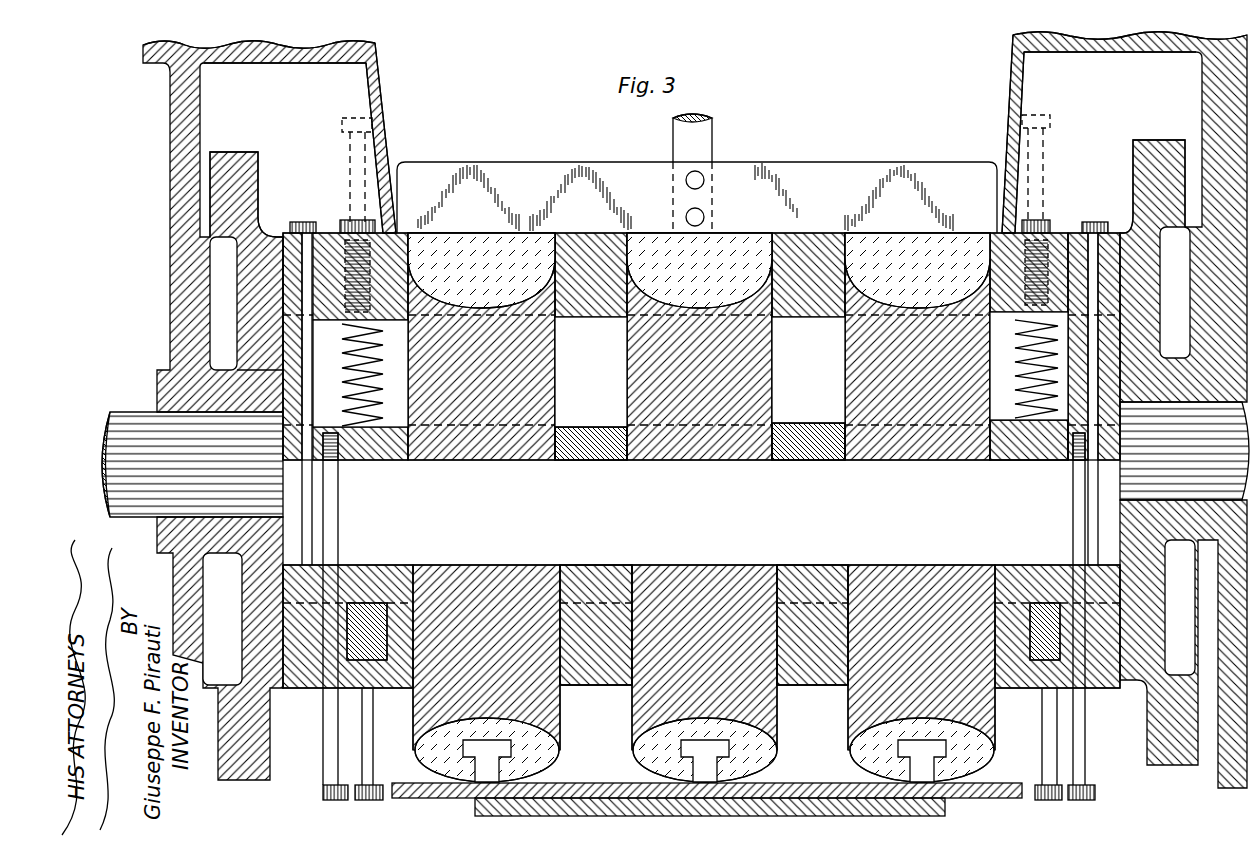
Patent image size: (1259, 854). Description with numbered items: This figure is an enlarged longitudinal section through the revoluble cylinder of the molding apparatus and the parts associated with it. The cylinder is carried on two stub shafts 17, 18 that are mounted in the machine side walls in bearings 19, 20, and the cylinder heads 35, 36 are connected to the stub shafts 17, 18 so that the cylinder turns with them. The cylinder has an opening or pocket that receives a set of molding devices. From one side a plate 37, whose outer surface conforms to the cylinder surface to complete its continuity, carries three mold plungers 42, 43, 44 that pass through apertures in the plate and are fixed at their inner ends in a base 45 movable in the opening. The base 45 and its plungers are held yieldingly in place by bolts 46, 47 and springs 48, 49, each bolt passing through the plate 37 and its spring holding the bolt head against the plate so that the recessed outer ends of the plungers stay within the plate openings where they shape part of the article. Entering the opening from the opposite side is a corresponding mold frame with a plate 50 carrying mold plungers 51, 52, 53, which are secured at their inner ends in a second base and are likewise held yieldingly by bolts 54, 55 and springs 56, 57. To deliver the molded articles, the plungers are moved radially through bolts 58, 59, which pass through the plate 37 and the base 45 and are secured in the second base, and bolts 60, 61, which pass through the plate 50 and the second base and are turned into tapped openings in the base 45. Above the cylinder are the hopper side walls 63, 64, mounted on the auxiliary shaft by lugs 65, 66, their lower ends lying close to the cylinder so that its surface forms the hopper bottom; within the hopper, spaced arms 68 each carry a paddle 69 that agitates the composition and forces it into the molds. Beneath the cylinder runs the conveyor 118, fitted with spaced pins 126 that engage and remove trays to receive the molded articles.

The stub shaft 17 is at (116, 422).
The stub shaft 18 is at (1184, 451).
The bearing 19 is at (232, 397).
The bearing 20 is at (1168, 382).
The cylinder head 35 is at (232, 152).
The cylinder head 36 is at (1148, 142).
The plate 37 is at (598, 312).
The mold plunger 42 is at (548, 400).
The mold plunger 43 is at (752, 380).
The mold plunger 44 is at (963, 385).
The base 45 is at (596, 460).
The bolt 46 is at (345, 225).
The bolt 47 is at (1043, 222).
The spring 48 is at (357, 350).
The spring 49 is at (1045, 365).
The plate 50 is at (600, 685).
The mold plunger 51 is at (548, 712).
The mold plunger 52 is at (765, 690).
The mold plunger 53 is at (865, 705).
The bolt 54 is at (373, 745).
The bolt 55 is at (1046, 744).
The spring 56 is at (368, 688).
The spring 57 is at (1018, 686).
The bolt 58 is at (305, 258).
The bolt 59 is at (1073, 230).
The bolt 60 is at (338, 523).
The bolt 61 is at (1073, 512).
The hopper side wall 63 is at (384, 92).
The hopper side wall 64 is at (1010, 96).
The lug 65 is at (288, 50).
The lug 66 is at (1110, 48).
The arm 68 is at (713, 130).
The paddle 69 is at (553, 165).
The conveyor 118 is at (978, 798).
The pin 126 is at (473, 815).